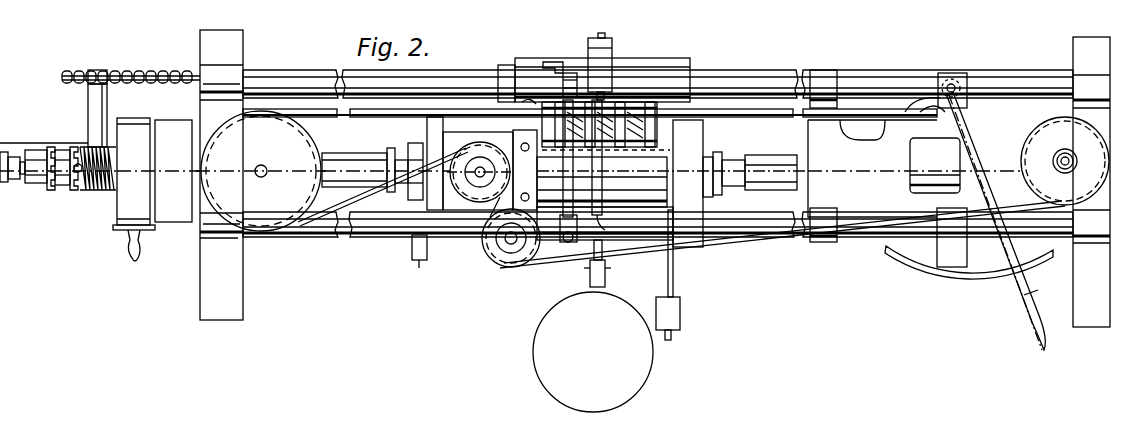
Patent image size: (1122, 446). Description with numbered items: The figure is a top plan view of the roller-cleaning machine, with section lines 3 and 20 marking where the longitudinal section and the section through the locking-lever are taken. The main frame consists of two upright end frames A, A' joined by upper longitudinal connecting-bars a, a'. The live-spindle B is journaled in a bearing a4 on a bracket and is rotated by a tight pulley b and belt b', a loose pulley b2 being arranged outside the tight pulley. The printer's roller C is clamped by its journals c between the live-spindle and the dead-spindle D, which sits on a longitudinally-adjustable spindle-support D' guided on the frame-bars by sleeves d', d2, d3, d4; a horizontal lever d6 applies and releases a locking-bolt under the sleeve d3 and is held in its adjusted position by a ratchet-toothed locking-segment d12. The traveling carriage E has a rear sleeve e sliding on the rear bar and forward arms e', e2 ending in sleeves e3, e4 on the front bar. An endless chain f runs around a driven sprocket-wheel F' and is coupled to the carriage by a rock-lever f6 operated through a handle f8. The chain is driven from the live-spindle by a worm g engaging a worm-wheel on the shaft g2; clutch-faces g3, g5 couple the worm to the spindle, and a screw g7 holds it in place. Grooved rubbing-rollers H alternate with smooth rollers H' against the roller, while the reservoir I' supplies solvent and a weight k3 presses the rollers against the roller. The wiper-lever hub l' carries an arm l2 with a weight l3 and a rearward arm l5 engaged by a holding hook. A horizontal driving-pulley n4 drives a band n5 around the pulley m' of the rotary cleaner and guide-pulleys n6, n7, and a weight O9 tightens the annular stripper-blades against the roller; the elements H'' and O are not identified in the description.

The upright end frame A is at (221, 175).
The upright end frame A' is at (1091, 182).
The upper longitudinal connecting-bar a is at (658, 224).
The upper longitudinal connecting-bar a' is at (658, 155).
The bearing a4 is at (44, 163).
The live-spindle B is at (354, 170).
The tight pulley b is at (173, 171).
The belt b' is at (137, 106).
The loose pulley b2 is at (134, 189).
The printer's roller C is at (624, 182).
The journals c is at (558, 171).
The dead-spindle D is at (760, 161).
The spindle-support D' is at (914, 168).
The sleeve d' is at (823, 77).
The sleeve d2 is at (821, 239).
The sleeve d3 is at (961, 78).
The sleeve d4 is at (952, 237).
The horizontal lever d6 is at (968, 135).
The locking-segment d12 is at (969, 276).
The carriage E is at (594, 66).
The longitudinal rear sleeve e is at (636, 82).
The forwardly-projecting arm e' is at (524, 103).
The forwardly-projecting arm e2 is at (693, 183).
The sleeve e3 is at (559, 224).
The sleeve e4 is at (687, 223).
The driven sprocket-wheel F' is at (98, 65).
The traveling endless chain f is at (131, 63).
The rock-lever f6 is at (556, 64).
The handle f8 is at (566, 243).
The worm g is at (98, 178).
The shaft g2 is at (86, 92).
The clutch-face g3 is at (68, 178).
The clutch-face g5 is at (51, 178).
The screw g7 is at (78, 162).
The rubbing-roller H is at (596, 111).
The rubbing-roller H' is at (612, 130).
The brush rod H'' is at (559, 158).
The reservoir I' is at (593, 352).
The weight k3 is at (590, 58).
The hub l' is at (605, 247).
The forwardly-extending arm l2 is at (673, 270).
The weight l3 is at (675, 318).
The rearwardly-projecting arm l5 is at (685, 185).
The pulley m' is at (480, 169).
The horizontal driving-pulley n4 is at (261, 171).
The driving band n5 is at (590, 119).
The guide-pulley n6 is at (505, 262).
The guide-pulley n7 is at (1065, 161).
The post O is at (427, 128).
The weight O9 is at (412, 253).
The section line 20 is at (951, 84).
The section line 3 is at (561, 178).